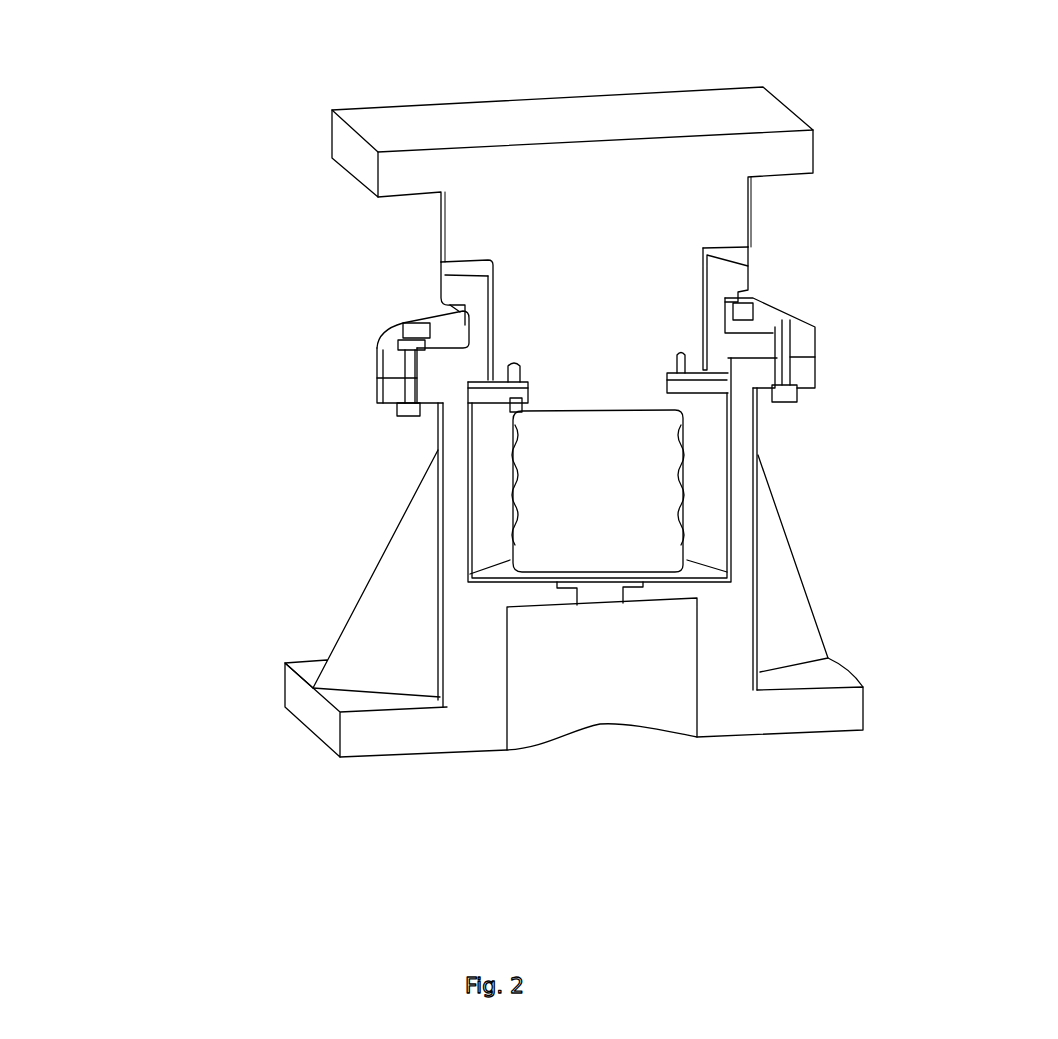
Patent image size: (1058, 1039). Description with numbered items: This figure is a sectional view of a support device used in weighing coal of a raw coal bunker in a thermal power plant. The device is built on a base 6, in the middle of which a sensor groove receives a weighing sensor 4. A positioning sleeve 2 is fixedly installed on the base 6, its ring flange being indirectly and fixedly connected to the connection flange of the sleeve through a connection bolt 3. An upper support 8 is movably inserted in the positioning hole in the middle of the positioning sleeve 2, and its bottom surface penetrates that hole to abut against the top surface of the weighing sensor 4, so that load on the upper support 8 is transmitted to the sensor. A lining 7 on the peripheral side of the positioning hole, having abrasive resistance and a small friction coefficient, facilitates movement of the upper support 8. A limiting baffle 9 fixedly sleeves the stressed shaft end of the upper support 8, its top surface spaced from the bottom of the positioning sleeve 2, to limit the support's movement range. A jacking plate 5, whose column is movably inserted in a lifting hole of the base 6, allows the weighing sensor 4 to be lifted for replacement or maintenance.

The positioning sleeve 2 is at (477, 300).
The connection bolt 3 is at (398, 347).
The weighing sensor 4 is at (623, 515).
The jacking plate 5 is at (597, 592).
The base 6 is at (737, 541).
The lining 7 is at (707, 302).
The upper support 8 is at (603, 219).
The limiting baffle 9 is at (692, 381).